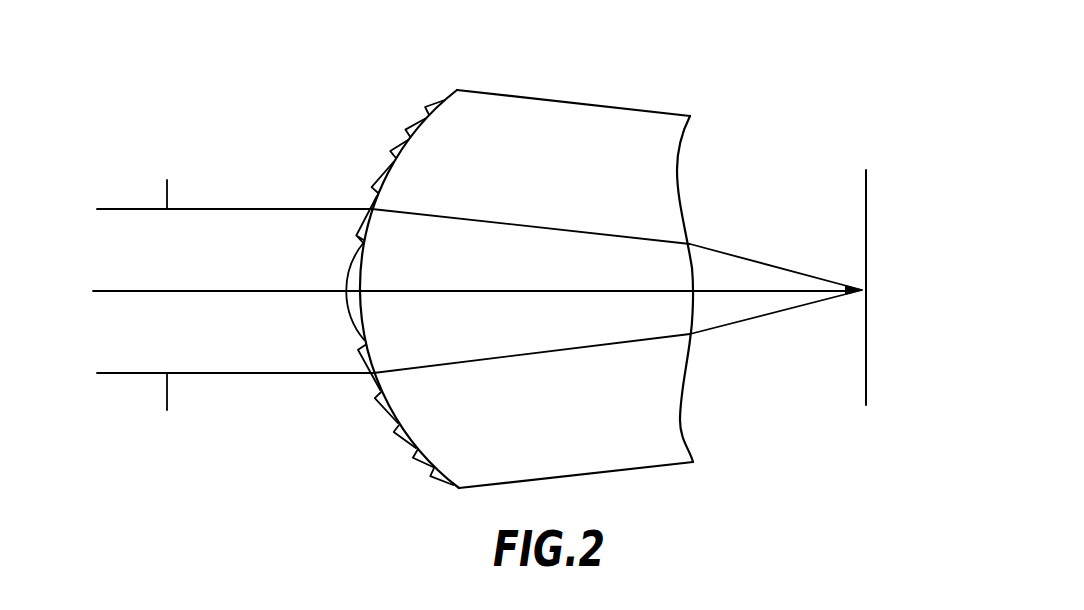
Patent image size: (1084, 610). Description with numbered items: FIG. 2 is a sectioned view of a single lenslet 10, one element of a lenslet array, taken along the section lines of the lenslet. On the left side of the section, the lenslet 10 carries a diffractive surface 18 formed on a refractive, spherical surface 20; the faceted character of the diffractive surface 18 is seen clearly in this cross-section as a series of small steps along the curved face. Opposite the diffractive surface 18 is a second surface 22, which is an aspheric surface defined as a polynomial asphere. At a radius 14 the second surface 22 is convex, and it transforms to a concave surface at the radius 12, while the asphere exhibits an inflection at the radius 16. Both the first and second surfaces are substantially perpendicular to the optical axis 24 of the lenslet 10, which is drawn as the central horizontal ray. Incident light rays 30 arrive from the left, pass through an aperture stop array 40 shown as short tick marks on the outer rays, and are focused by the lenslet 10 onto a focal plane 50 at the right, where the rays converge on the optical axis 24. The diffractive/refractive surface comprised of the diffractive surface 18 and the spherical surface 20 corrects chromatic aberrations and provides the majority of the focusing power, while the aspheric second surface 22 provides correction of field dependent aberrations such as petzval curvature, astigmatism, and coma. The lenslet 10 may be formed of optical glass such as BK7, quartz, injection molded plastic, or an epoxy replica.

The lenslet 10 is at (587, 118).
The radius 12 is at (683, 422).
The radius 14 is at (692, 289).
The radius 16 is at (691, 445).
The diffractive surface 18 is at (421, 108).
The refractive spherical surface 20 is at (381, 185).
The second surface 22 is at (680, 392).
The optical axis 24 is at (530, 291).
The incident light rays 30 is at (115, 209).
The aperture stop array 40 is at (167, 185).
The focal plane 50 is at (866, 185).